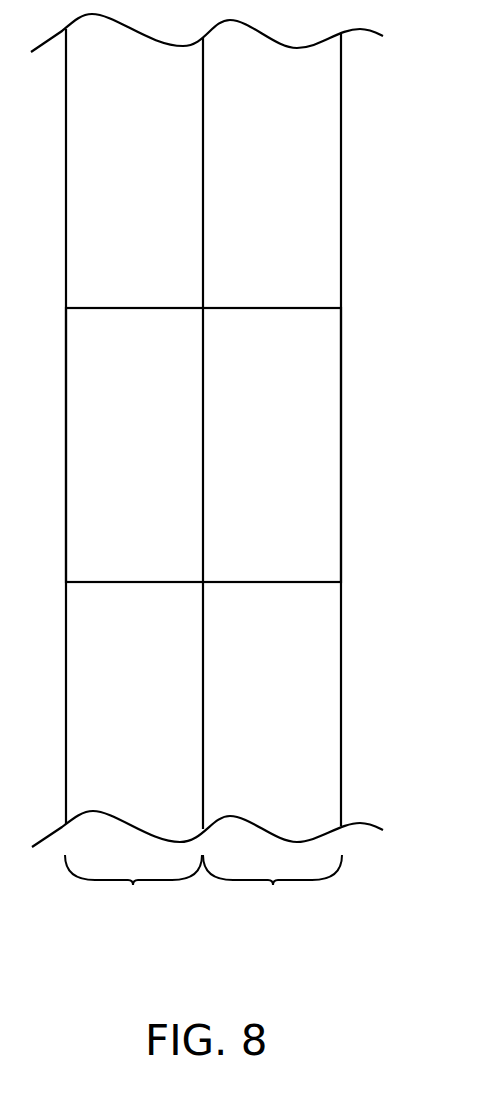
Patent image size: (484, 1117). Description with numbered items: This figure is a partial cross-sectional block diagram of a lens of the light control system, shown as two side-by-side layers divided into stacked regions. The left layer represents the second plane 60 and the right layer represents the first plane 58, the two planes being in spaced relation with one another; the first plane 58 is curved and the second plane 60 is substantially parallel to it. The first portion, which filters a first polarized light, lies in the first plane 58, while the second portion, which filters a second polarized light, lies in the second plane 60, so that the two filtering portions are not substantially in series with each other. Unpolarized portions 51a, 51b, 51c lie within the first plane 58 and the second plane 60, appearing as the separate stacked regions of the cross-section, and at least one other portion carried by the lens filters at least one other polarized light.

The unpolarized portion 51a is at (65, 240).
The unpolarized portion 51b is at (341, 442).
The unpolarized portion 51c is at (65, 700).
The first plane 58 is at (273, 885).
The second plane 60 is at (133, 885).